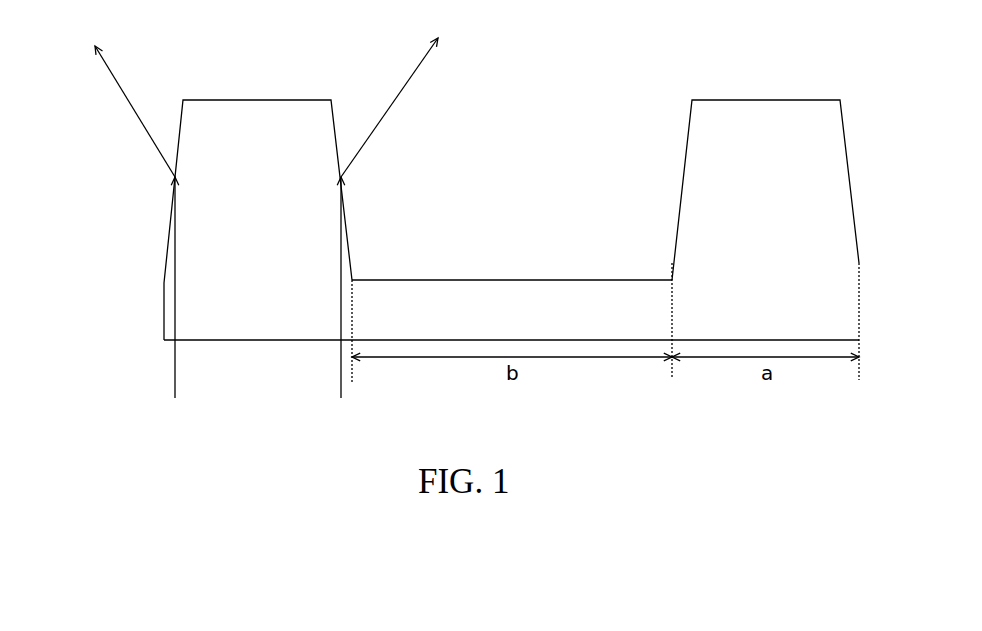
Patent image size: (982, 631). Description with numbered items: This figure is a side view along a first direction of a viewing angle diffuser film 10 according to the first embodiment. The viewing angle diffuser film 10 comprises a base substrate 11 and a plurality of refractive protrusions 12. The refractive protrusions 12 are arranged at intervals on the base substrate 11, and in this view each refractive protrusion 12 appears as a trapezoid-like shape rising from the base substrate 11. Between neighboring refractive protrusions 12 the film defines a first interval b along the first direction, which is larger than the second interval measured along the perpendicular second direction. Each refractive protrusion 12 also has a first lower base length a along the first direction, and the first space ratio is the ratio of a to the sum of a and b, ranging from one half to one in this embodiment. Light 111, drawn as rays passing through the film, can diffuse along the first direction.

The viewing angle diffuser film 10 is at (542, 72).
The base substrate 11 is at (583, 327).
The refractive protrusions 12 is at (793, 200).
The light 111 is at (175, 388).